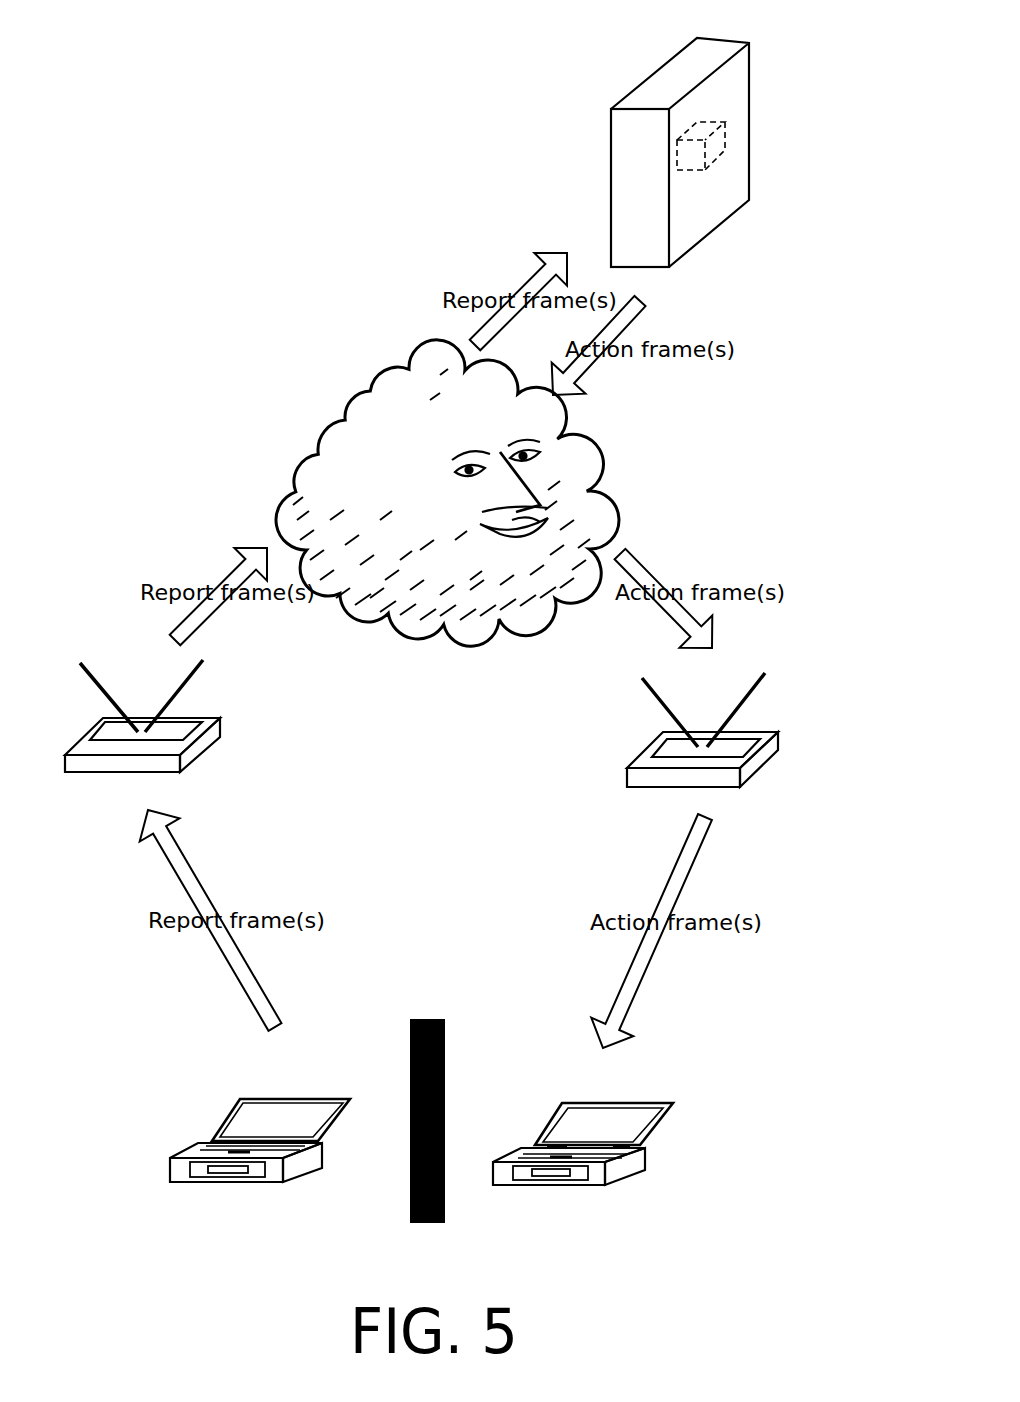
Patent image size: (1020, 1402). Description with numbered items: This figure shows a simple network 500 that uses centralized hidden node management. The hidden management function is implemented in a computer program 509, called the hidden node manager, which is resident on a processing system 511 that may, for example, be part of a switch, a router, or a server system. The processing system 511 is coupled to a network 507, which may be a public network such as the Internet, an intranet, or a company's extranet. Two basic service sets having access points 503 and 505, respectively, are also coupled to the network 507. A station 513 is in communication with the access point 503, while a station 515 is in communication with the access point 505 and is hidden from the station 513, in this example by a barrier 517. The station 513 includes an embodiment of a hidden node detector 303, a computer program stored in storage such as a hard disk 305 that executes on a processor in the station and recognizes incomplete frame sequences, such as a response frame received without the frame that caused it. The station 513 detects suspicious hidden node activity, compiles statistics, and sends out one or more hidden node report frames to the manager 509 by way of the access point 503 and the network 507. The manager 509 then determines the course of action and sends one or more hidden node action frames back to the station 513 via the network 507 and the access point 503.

The wireless network system 500 is at (168, 381).
The access point 503 is at (212, 717).
The access point 505 is at (628, 789).
The network 507 is at (585, 452).
The hidden node manager 509 is at (726, 143).
The processing system 511 is at (720, 148).
The station 513 is at (263, 1162).
The station 515 is at (672, 1107).
The barrier 517 is at (445, 1028).
The hidden node detector 303 is at (247, 1170).
The hard disk 305 is at (188, 1167).